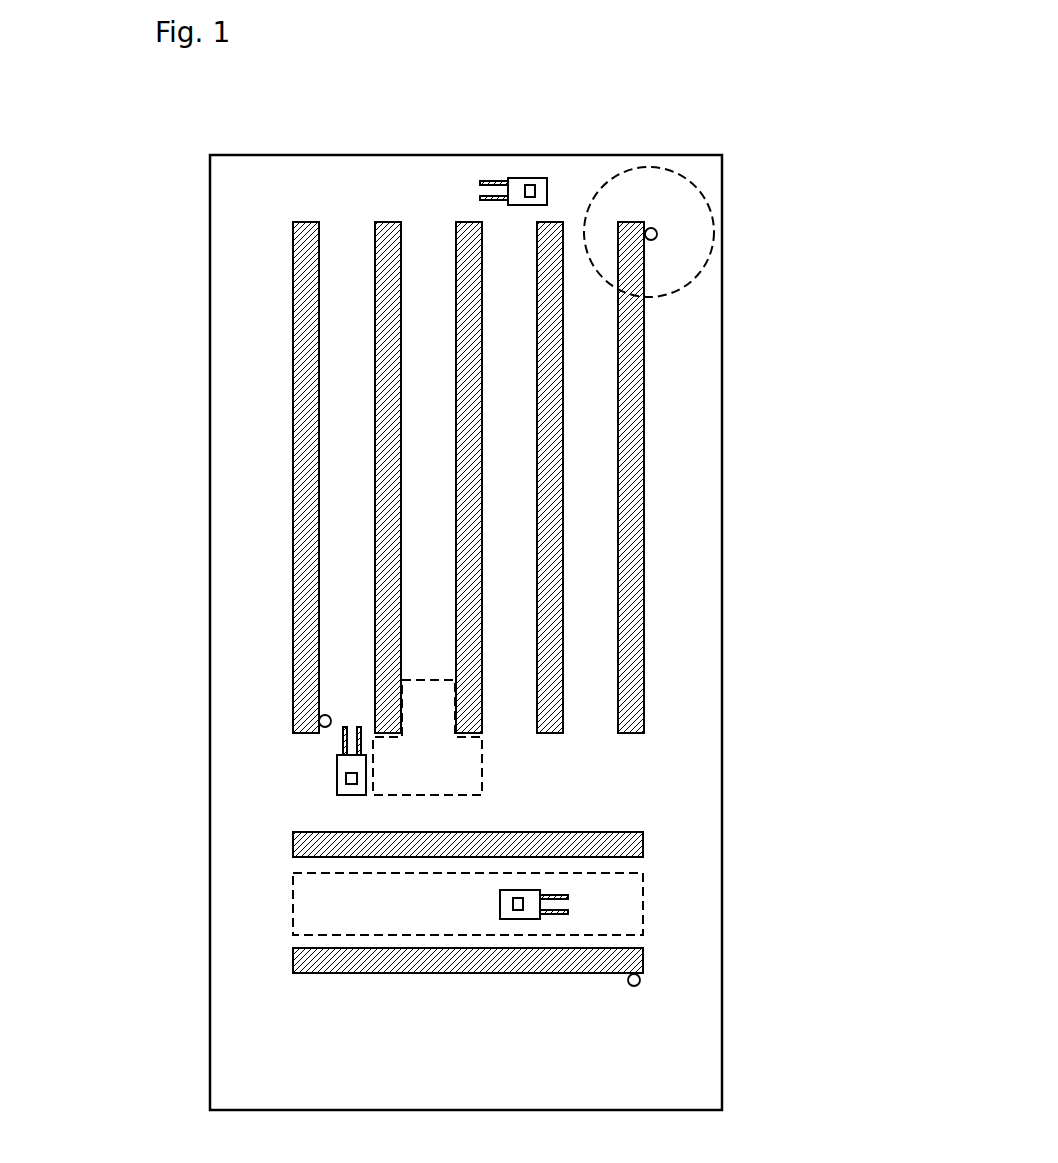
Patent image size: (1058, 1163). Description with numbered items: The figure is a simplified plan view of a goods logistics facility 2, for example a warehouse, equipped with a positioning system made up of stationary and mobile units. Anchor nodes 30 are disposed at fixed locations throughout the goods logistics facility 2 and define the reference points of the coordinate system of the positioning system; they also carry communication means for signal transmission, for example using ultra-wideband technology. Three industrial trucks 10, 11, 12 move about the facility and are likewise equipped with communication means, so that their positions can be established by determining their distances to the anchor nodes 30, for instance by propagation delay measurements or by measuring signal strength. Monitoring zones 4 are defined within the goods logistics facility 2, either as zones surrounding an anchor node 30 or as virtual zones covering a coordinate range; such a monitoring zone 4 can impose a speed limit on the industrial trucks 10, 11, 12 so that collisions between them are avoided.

The goods logistics facility 2 is at (645, 117).
The monitoring zone 4 is at (177, 952).
The industrial truck 10 is at (522, 192).
The industrial truck 11 is at (345, 778).
The industrial truck 12 is at (527, 905).
The anchor node 30 is at (657, 234).